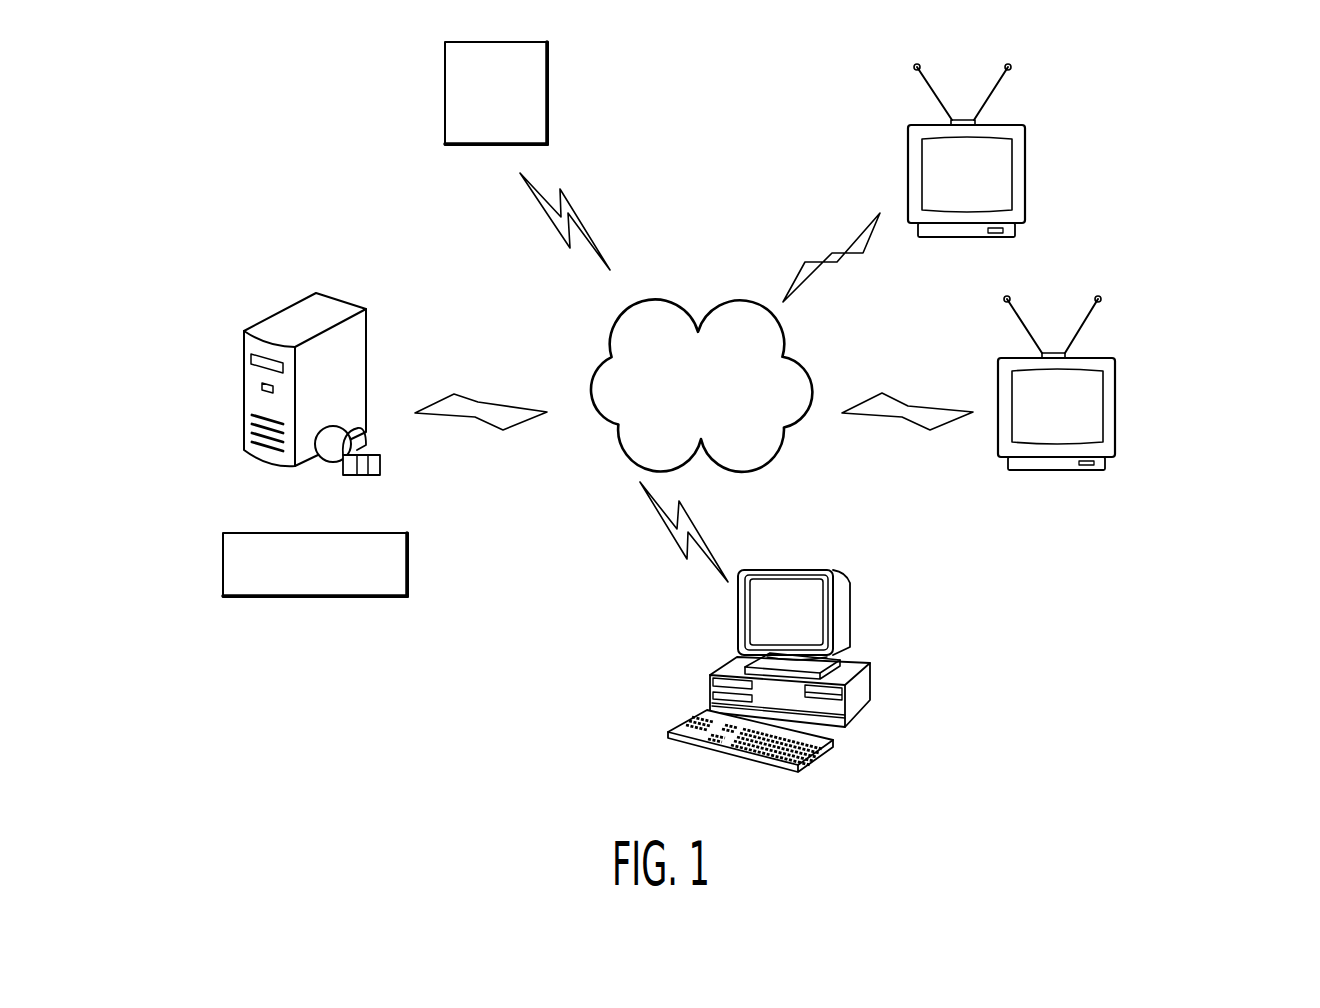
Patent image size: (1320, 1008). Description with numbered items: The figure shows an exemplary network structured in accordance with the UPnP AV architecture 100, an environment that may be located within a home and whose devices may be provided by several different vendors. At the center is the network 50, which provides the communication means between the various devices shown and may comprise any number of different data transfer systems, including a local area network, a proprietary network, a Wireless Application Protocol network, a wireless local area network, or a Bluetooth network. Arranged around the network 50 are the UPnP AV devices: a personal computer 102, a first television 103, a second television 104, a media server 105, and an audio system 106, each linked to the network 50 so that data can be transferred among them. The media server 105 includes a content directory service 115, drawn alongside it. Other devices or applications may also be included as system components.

The UPnP AV architecture 100 is at (1303, 102).
The network 50 is at (780, 447).
The personal computer 102 is at (852, 622).
The first television 103 is at (1117, 406).
The second television 104 is at (1027, 171).
The media server 105 is at (272, 312).
The audio system 106 is at (548, 93).
The content directory service (CDS) 115 is at (223, 565).